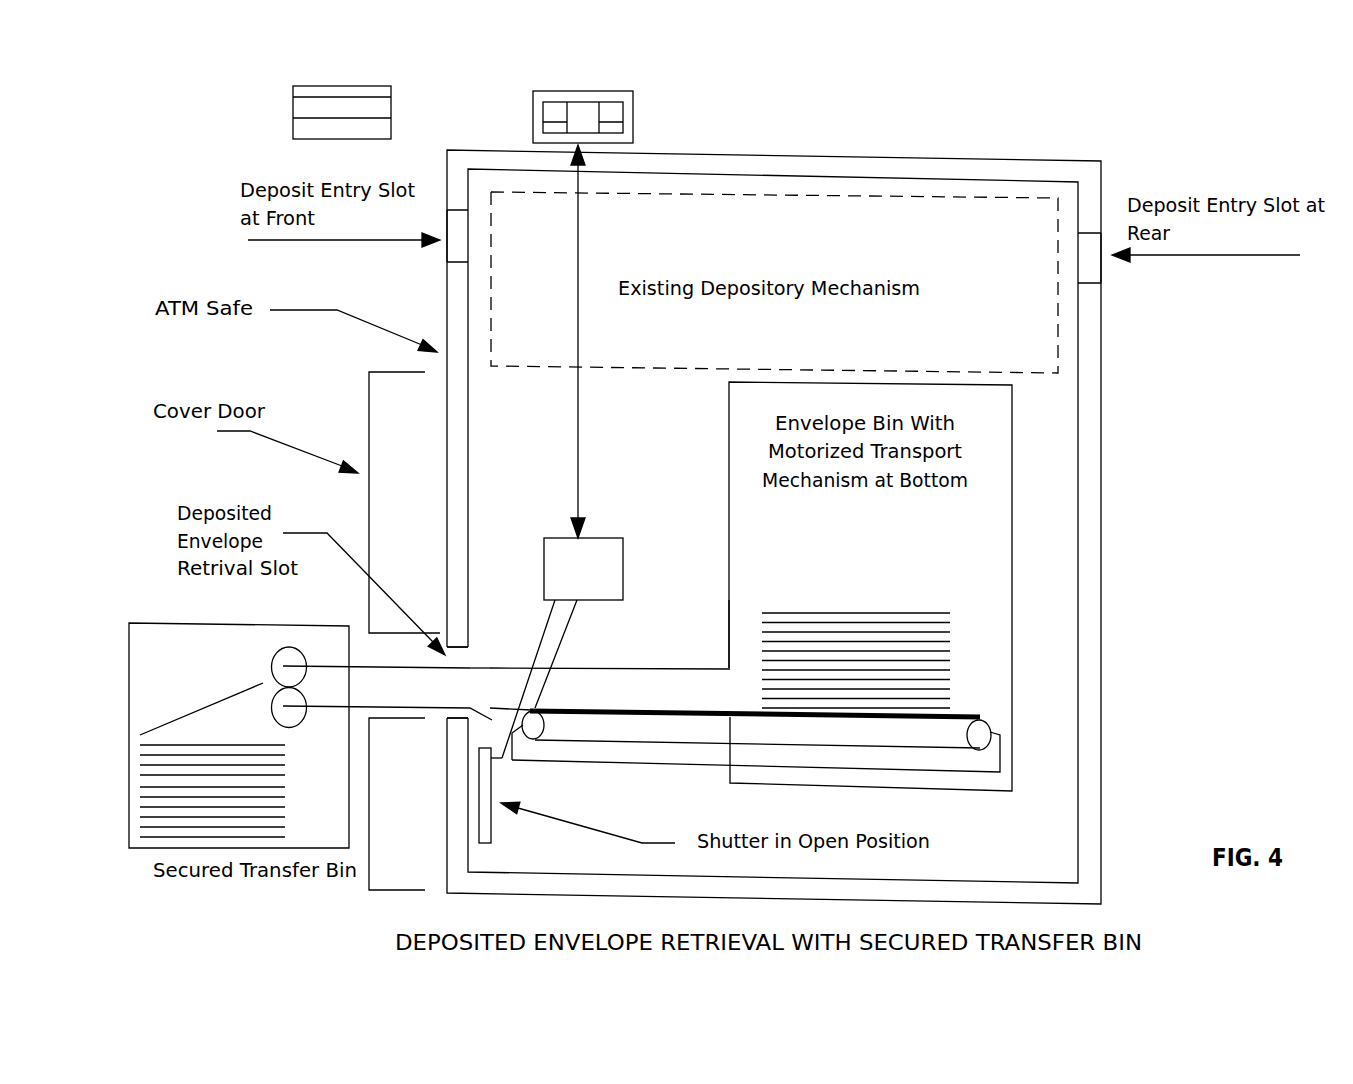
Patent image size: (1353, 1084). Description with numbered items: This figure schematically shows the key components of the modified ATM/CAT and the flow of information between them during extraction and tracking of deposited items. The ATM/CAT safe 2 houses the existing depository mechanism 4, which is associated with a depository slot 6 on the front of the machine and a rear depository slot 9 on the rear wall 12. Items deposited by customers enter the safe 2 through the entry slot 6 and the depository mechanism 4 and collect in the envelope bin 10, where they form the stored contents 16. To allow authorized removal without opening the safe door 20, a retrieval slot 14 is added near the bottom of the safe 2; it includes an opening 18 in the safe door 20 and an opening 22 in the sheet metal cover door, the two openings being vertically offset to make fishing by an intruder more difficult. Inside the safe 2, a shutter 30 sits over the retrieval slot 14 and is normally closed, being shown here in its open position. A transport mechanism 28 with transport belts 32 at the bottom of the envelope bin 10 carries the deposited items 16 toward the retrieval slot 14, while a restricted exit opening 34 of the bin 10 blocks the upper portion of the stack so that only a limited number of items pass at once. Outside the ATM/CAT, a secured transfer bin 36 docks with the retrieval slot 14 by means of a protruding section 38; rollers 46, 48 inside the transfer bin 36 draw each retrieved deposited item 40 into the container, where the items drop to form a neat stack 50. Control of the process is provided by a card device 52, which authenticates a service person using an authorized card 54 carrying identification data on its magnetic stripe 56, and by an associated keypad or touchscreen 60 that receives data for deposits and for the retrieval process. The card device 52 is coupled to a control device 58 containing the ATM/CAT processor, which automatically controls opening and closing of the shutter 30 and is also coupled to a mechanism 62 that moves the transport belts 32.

The ATM/CAT safe 2 is at (1130, 471).
The existing depository mechanism 4 is at (1058, 333).
The depository slot 6 is at (447, 250).
The rear depository slot 9 is at (1103, 263).
The envelope bin 10 is at (1013, 515).
The rear wall 12 is at (1102, 417).
The retrieval slot 14 is at (382, 651).
The deposited items 16 is at (848, 588).
The opening in safe door 18 is at (457, 659).
The safe door 20 is at (468, 463).
The opening in cover door 22 is at (392, 697).
The transport mechanism 28 is at (987, 703).
The shutter 30 is at (499, 782).
The transport belts 32 is at (598, 707).
The exit opening 34 is at (710, 693).
The transfer bin 36 is at (239, 713).
The protruding section 38 is at (449, 660).
The retrieved deposited item 40 is at (198, 705).
The roller 46 is at (282, 646).
The roller 48 is at (292, 727).
The stack 50 is at (206, 735).
The card device 52 is at (591, 117).
The authorized card 54 is at (320, 125).
The magnetic stripe 56 is at (300, 106).
The control device 58 is at (633, 569).
The keypad or touchscreen 60 is at (633, 111).
The belt drive mechanism 62 is at (532, 740).